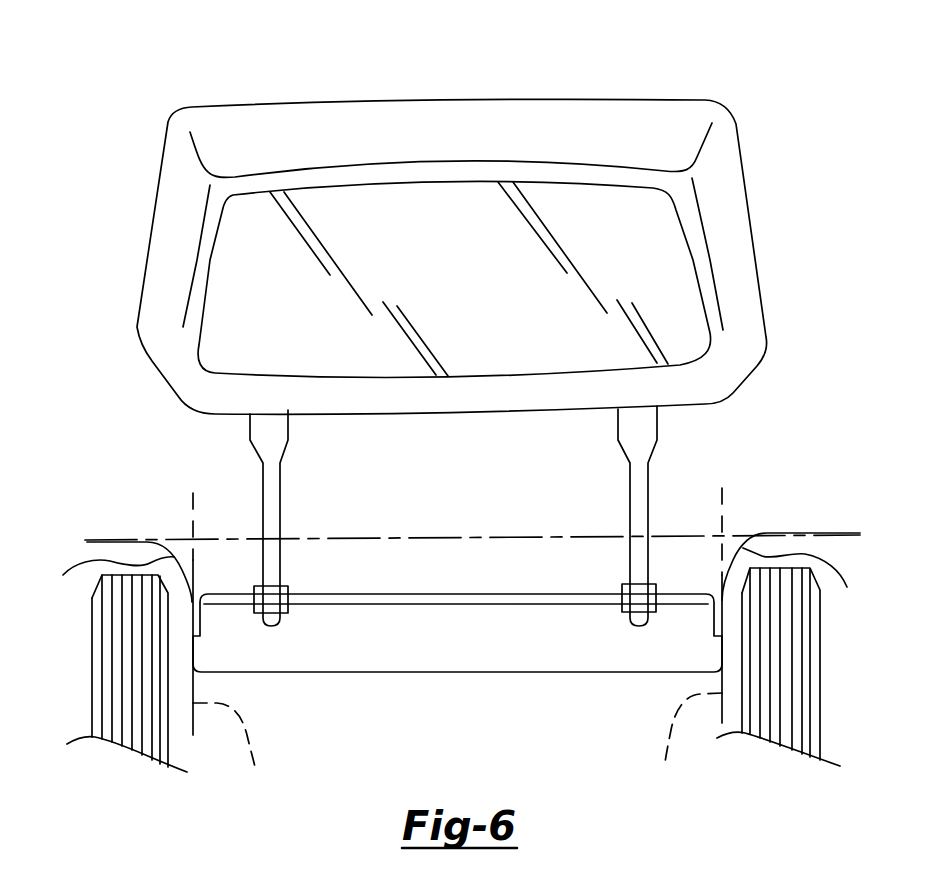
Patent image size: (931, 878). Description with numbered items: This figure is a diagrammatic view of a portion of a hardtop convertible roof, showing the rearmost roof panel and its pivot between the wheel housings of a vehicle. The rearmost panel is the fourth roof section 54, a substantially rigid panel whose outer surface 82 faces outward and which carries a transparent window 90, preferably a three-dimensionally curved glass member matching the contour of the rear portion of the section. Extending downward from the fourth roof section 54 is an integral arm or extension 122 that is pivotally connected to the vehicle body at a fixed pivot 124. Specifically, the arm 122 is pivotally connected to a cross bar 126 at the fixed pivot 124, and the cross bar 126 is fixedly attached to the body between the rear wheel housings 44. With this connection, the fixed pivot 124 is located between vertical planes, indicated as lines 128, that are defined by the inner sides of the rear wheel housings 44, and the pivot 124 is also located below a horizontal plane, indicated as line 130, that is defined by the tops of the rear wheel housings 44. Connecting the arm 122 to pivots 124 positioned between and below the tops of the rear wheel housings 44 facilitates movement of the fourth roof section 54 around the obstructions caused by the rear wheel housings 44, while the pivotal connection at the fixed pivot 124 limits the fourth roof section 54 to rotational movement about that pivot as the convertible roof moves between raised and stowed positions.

The outer surface 82 is at (325, 120).
The fourth roof section 54 is at (426, 151).
The transparent window 90 is at (573, 208).
The arm 122 is at (260, 485).
The fixed pivot 124 is at (283, 615).
The cross bar 126 is at (455, 597).
The line 130 is at (557, 533).
The rear wheel housings 44 is at (453, 630).
The lines 128 is at (457, 746).